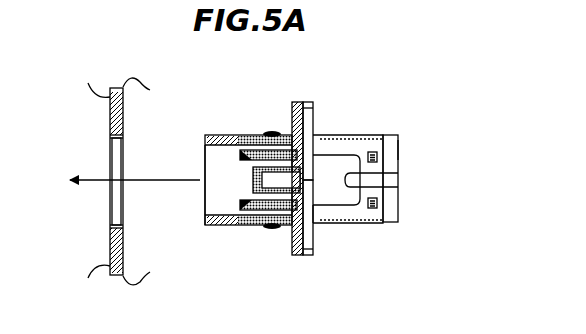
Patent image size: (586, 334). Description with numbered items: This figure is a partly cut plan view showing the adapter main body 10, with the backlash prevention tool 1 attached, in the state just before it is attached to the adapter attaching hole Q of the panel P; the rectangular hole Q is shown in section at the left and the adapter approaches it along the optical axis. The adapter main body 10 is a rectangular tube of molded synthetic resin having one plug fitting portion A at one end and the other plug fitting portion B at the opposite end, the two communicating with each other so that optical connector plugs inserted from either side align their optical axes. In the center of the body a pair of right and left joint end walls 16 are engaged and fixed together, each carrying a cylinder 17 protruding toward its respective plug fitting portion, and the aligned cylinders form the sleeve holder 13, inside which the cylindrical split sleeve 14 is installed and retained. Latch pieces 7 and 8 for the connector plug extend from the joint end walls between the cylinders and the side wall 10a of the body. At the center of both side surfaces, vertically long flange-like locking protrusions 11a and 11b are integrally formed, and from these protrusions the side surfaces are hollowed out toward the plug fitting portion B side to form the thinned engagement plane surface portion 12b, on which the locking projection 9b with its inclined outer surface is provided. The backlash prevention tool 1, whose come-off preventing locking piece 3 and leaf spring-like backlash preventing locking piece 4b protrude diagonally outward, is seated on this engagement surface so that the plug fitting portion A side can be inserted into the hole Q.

The backlash prevention tool 1 is at (232, 230).
The come-off preventing locking piece 3 is at (272, 132).
The backlash preventing locking piece 4b is at (290, 133).
The latch piece 7 is at (240, 156).
The latch piece 8 is at (243, 203).
The locking projection 9b is at (378, 157).
The adapter main body 10 is at (406, 134).
The side wall 10a is at (208, 228).
The locking protrusion 11a is at (316, 104).
The locking protrusion 11b is at (308, 256).
The engagement plane surface portion 12b is at (372, 135).
The sleeve holder 13 is at (246, 177).
The split sleeve 14 is at (347, 180).
The joint end wall 16 is at (330, 218).
The cylinder 17 is at (258, 133).
The panel P is at (110, 123).
The adapter attaching hole Q is at (110, 142).
The plug fitting portion A is at (203, 192).
The plug fitting portion B is at (403, 150).